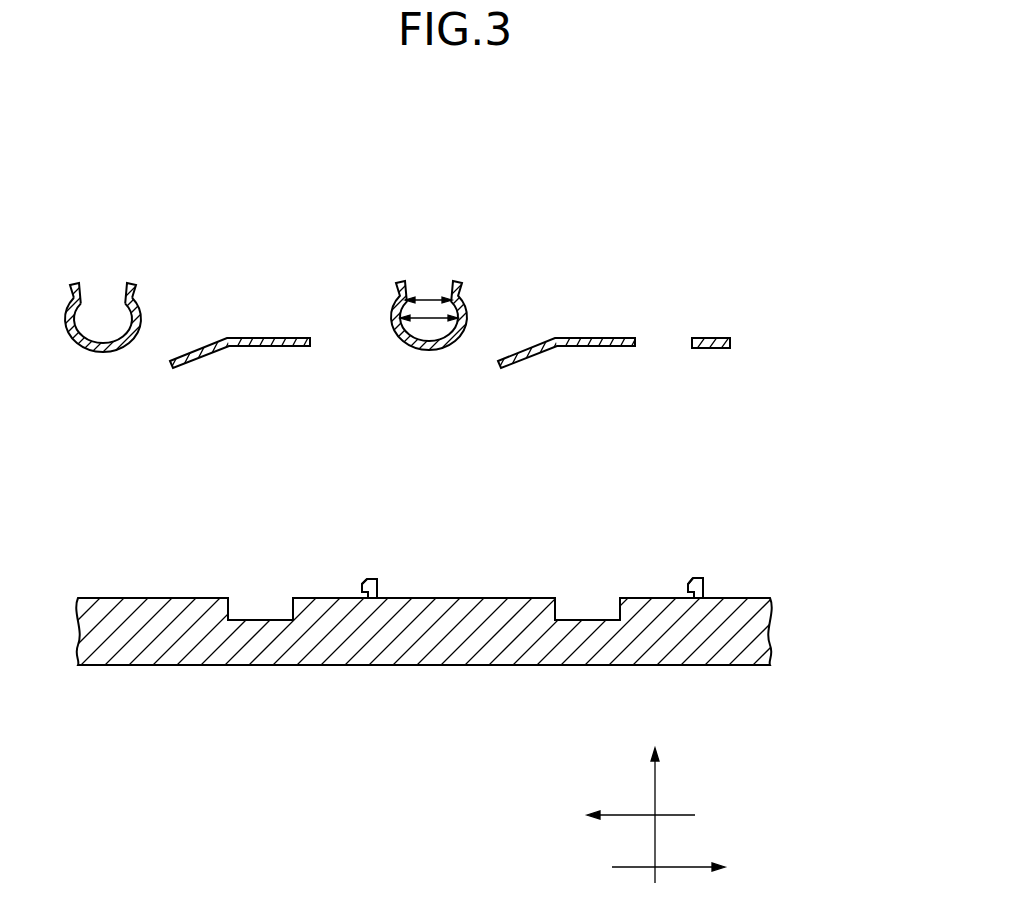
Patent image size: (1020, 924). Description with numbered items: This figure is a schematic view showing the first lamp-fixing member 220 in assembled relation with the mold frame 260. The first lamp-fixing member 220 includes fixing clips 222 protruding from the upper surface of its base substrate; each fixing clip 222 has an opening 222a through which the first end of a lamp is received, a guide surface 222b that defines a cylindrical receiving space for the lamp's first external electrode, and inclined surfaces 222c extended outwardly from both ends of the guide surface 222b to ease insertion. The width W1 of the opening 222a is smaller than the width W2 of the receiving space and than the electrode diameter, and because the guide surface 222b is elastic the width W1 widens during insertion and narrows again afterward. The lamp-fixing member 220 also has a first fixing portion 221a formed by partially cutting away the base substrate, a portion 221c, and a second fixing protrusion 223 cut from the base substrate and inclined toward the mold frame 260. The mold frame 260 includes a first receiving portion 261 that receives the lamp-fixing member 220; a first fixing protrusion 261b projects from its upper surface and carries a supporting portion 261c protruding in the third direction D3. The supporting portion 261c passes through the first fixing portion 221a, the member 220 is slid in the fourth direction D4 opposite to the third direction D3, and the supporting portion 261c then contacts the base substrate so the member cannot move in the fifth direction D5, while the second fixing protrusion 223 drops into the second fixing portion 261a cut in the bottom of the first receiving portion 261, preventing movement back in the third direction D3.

The first lamp-fixing member 220 is at (775, 330).
The fixing clip 222 is at (193, 228).
The opening 222a is at (103, 294).
The guide surface 222b is at (137, 315).
The inclined surface 222c is at (88, 296).
The strip plate 221c is at (291, 336).
The first fixing portion 221a is at (354, 343).
The second fixing protrusion 223 is at (193, 353).
The width of the opening W1 is at (428, 298).
The width of the receiving space W2 is at (430, 322).
The mold frame 260 is at (818, 616).
The first receiving portion 261 is at (407, 648).
The second fixing portion 261a is at (262, 596).
The first fixing protrusion 261b is at (382, 592).
The supporting portion 261c is at (368, 580).
The third direction D3 is at (626, 816).
The fourth direction D4 is at (683, 870).
The fifth direction D5 is at (655, 802).